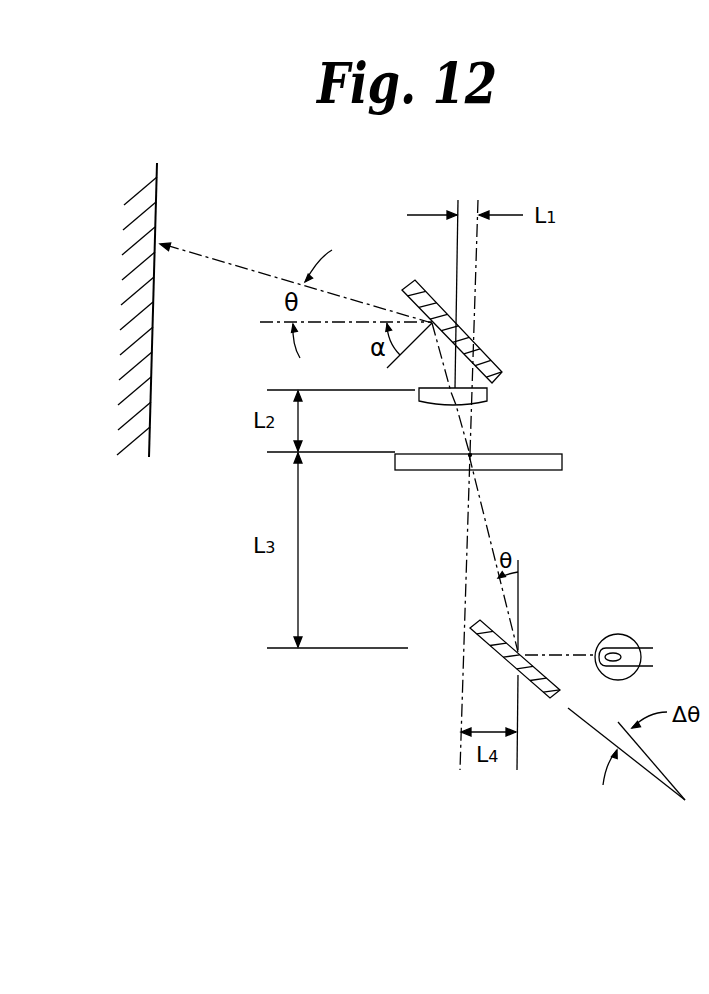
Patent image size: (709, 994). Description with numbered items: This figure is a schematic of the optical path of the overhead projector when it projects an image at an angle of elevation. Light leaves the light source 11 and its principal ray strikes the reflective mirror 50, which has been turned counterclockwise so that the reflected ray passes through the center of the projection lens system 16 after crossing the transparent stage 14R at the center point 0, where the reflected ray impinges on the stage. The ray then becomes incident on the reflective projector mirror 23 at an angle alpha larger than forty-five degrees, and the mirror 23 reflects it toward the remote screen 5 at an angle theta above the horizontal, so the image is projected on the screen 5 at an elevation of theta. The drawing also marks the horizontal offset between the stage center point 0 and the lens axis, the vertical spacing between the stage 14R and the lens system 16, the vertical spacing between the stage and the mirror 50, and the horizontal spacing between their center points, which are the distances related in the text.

The remote screen 5 is at (160, 190).
The reflective projector mirror 23 is at (498, 350).
The projection lens system 16 is at (487, 397).
The center point of optical element 0 is at (470, 455).
The optical element (rotary) 14R is at (562, 462).
The reflective mirror 50 is at (470, 630).
The light source 11 is at (620, 634).